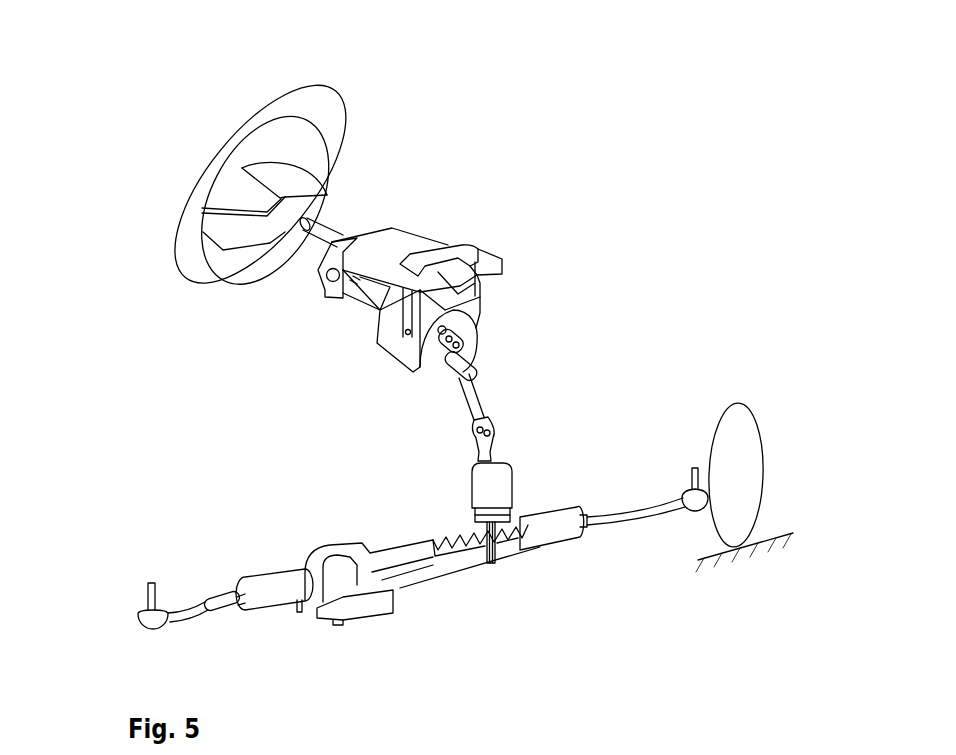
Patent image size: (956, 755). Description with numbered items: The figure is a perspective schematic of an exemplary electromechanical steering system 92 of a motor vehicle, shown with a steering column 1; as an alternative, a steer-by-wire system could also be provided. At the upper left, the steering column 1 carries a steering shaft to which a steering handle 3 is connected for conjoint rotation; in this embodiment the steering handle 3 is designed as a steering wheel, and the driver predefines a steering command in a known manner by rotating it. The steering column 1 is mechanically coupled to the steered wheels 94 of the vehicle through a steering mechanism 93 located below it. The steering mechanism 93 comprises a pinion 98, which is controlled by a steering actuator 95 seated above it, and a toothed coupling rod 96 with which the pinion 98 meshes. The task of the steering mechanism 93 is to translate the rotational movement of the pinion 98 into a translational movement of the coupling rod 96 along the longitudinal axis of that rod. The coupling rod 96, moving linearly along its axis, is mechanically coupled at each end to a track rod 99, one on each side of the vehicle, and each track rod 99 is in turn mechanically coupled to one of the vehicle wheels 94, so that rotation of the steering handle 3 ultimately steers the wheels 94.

The electromechanical steering system 92 is at (510, 95).
The steering column 1 is at (473, 200).
The steering handle 3 is at (333, 123).
The steering mechanism 93 is at (435, 475).
The steering actuator 95 is at (512, 485).
The pinion 98 is at (497, 558).
The toothed coupling rod 96 is at (460, 557).
The track rod 99 is at (185, 617).
The steered wheels 94 is at (740, 415).